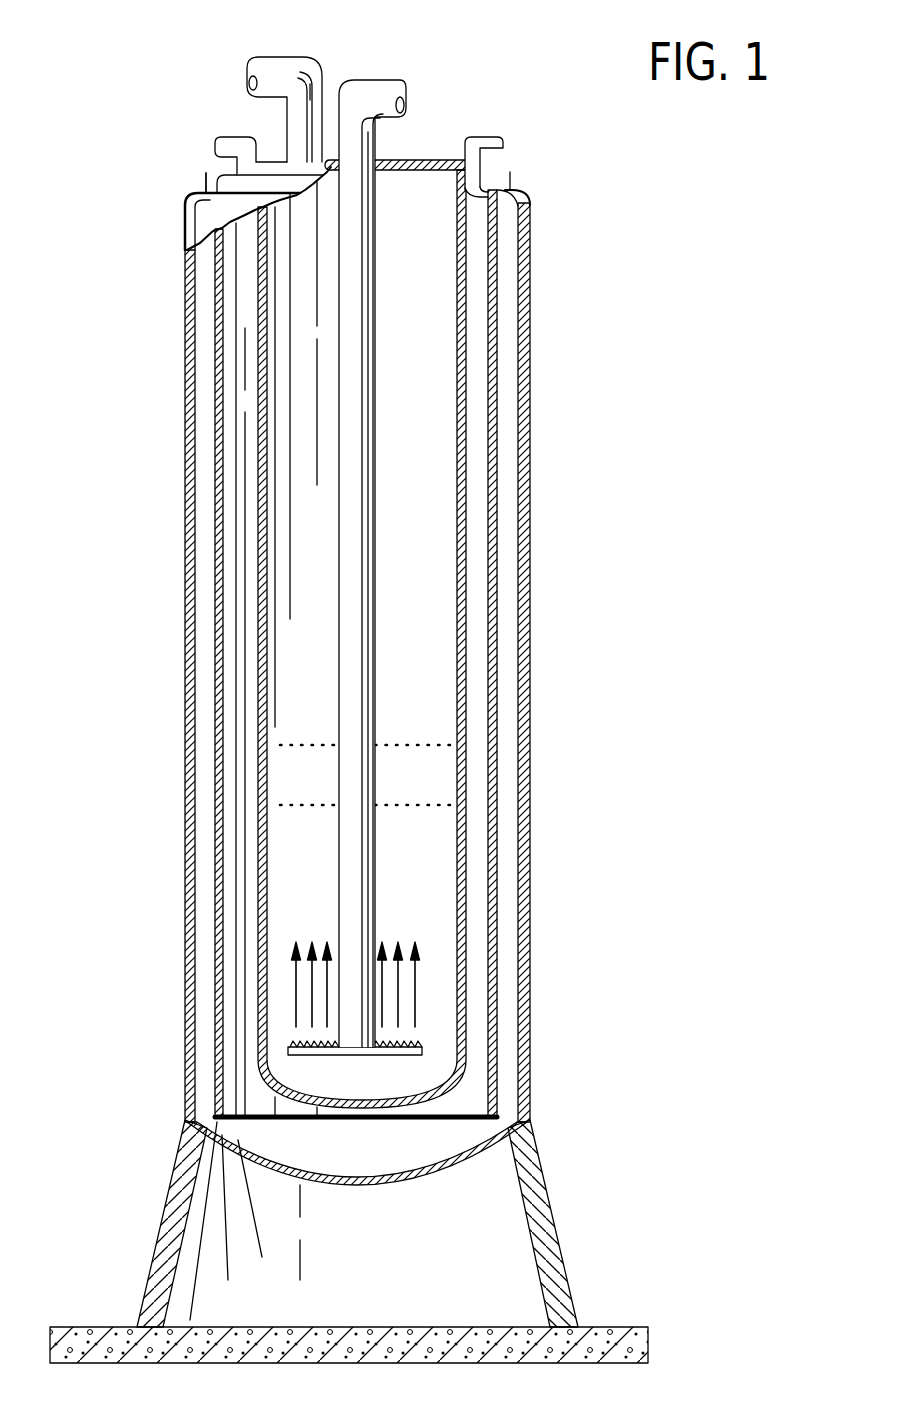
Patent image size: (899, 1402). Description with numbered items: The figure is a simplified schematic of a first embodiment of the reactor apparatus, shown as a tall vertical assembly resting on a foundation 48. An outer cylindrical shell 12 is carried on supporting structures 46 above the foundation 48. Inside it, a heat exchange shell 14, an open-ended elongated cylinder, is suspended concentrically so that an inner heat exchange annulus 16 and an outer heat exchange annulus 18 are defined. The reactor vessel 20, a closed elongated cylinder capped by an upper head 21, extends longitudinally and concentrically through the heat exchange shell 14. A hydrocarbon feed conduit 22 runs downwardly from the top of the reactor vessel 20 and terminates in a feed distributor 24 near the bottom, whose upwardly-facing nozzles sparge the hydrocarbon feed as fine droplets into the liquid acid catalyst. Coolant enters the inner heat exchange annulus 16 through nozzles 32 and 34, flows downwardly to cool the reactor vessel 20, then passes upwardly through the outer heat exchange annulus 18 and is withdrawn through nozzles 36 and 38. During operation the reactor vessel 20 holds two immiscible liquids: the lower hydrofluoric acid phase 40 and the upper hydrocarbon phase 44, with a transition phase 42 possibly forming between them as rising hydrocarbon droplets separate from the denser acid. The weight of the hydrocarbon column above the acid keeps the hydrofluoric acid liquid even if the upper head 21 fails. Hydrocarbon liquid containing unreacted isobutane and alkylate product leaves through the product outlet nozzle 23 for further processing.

The outer cylindrical shell 12 is at (423, 1178).
The heat exchange shell 14 is at (497, 680).
The inner heat exchange annulus 16 is at (478, 752).
The outer heat exchange annulus 18 is at (510, 820).
The reactor vessel 20 is at (465, 438).
The upper head 21 is at (397, 158).
The hydrocarbon feed conduit 22 is at (517, 99).
The product outlet nozzle 23 is at (146, 73).
The feed distributor 24 is at (378, 1055).
The nozzle 32 is at (232, 140).
The nozzle 34 is at (487, 135).
The nozzle 36 is at (206, 173).
The nozzle 38 is at (510, 172).
The lower hydrofluoric acid phase 40 is at (322, 848).
The transition phase 42 is at (322, 784).
The upper hydrocarbon phase 44 is at (322, 727).
The structures 46 is at (163, 1210).
The foundation 48 is at (108, 1322).